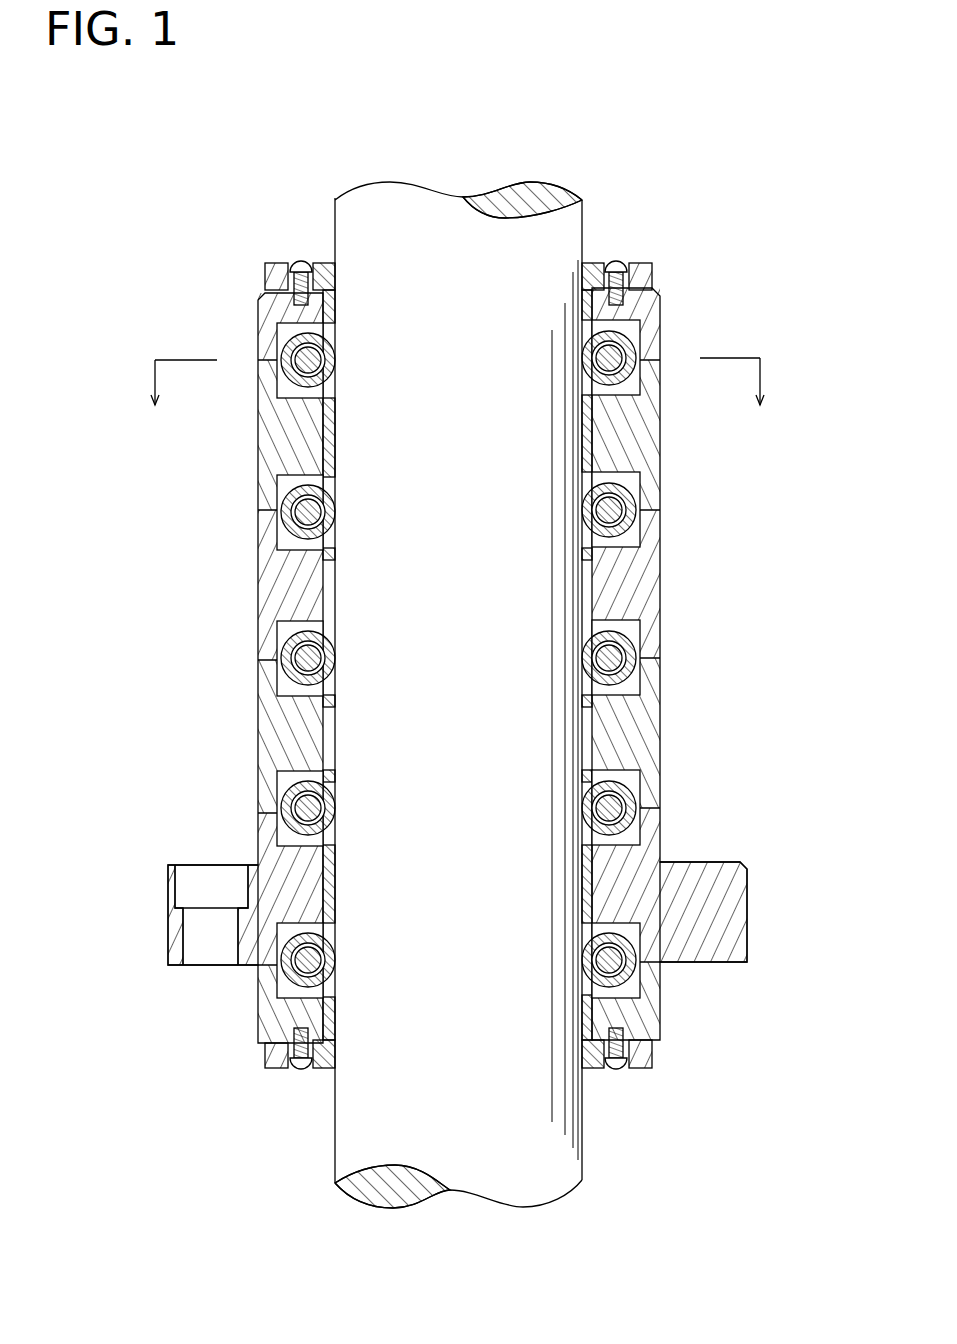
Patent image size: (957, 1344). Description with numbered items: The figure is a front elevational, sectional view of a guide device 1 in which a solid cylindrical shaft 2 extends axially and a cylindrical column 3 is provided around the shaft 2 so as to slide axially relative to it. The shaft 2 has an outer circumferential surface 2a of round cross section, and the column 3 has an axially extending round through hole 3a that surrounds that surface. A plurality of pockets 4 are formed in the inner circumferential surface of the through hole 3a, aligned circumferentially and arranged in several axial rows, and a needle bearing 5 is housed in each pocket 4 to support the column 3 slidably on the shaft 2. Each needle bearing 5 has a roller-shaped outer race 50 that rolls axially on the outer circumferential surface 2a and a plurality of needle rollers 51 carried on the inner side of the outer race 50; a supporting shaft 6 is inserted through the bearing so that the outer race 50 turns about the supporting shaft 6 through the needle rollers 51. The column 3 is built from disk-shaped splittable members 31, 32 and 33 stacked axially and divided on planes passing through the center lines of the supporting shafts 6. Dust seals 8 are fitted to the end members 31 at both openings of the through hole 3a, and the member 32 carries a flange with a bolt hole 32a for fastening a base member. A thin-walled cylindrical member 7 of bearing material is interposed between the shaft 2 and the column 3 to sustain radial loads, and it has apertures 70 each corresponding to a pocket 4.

The guide device 1 is at (505, 125).
The shaft 2 is at (360, 178).
The outer circumferential surface 2a is at (333, 225).
The column 3 is at (664, 282).
The through hole 3a is at (593, 588).
The pocket 4 is at (640, 345).
The needle bearing 5 is at (289, 535).
The supporting shaft 6 is at (623, 803).
The cylindrical member 7 is at (323, 438).
The dust seal 8 is at (622, 265).
The splittable member 31 is at (258, 313).
The splittable member 32 is at (745, 876).
The bolt hole 32a is at (193, 955).
The splittable member 33 is at (263, 408).
The outer race 50 is at (623, 673).
The needle roller 51 is at (633, 655).
The aperture 70 is at (650, 430).